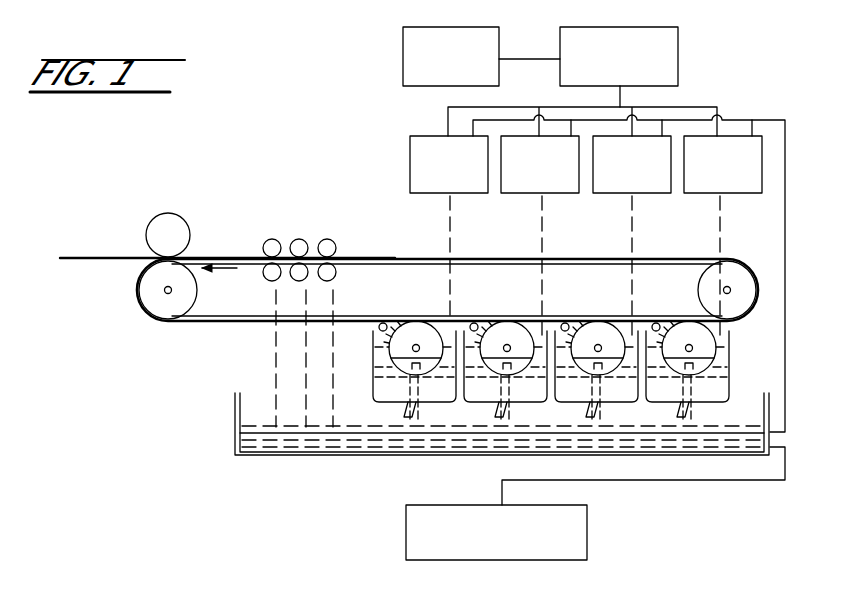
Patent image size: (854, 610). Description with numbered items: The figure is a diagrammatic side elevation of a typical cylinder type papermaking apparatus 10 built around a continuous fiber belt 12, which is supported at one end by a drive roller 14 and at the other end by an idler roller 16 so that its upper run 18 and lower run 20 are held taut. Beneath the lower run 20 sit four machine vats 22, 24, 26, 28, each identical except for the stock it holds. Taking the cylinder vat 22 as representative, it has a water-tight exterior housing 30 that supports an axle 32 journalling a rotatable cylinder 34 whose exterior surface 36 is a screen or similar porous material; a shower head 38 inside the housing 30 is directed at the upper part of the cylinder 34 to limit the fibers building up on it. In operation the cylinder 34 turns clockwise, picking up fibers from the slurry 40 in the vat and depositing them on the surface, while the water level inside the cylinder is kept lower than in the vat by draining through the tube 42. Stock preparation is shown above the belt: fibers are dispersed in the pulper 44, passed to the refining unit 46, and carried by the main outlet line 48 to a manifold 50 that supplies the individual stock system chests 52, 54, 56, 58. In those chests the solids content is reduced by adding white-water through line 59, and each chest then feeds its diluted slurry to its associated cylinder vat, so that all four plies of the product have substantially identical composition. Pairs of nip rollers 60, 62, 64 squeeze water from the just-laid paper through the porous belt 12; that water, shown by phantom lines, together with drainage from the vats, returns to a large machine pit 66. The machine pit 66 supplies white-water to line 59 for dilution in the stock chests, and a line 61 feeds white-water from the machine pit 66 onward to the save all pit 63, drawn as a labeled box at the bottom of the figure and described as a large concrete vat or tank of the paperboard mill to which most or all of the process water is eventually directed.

The cylinder type papermaking apparatus 10 is at (302, 187).
The continuous fiber belt 12 is at (197, 326).
The drive roller 14 is at (155, 293).
The idler roller 16 is at (732, 283).
The upper run 18 is at (392, 258).
The lower run 20 is at (258, 322).
The cylinder vat 22 is at (367, 398).
The machine vat 24 is at (473, 411).
The machine vat 26 is at (618, 412).
The machine vat 28 is at (667, 400).
The exterior housing 30 is at (385, 384).
The axle 32 is at (413, 349).
The rotatable cylinder 34 is at (430, 386).
The exterior surface 36 is at (445, 320).
The shower head 38 is at (378, 329).
The slurry 40 is at (387, 385).
The tube 42 is at (408, 413).
The pulper 44 is at (403, 68).
The refining unit 46 is at (678, 64).
The main outlet line 48 is at (622, 97).
The manifold 50 is at (448, 107).
The stock system chest 52 is at (435, 194).
The stock system chest 54 is at (527, 194).
The stock system chest 56 is at (616, 194).
The stock system chest 58 is at (706, 194).
The line 59 is at (785, 328).
The pair of nip rollers 60 is at (258, 241).
The line 61 is at (738, 482).
The pair of nip rollers 62 is at (308, 236).
The save all pit 63 is at (542, 560).
The pair of nip rollers 64 is at (342, 242).
The machine pit 66 is at (233, 431).